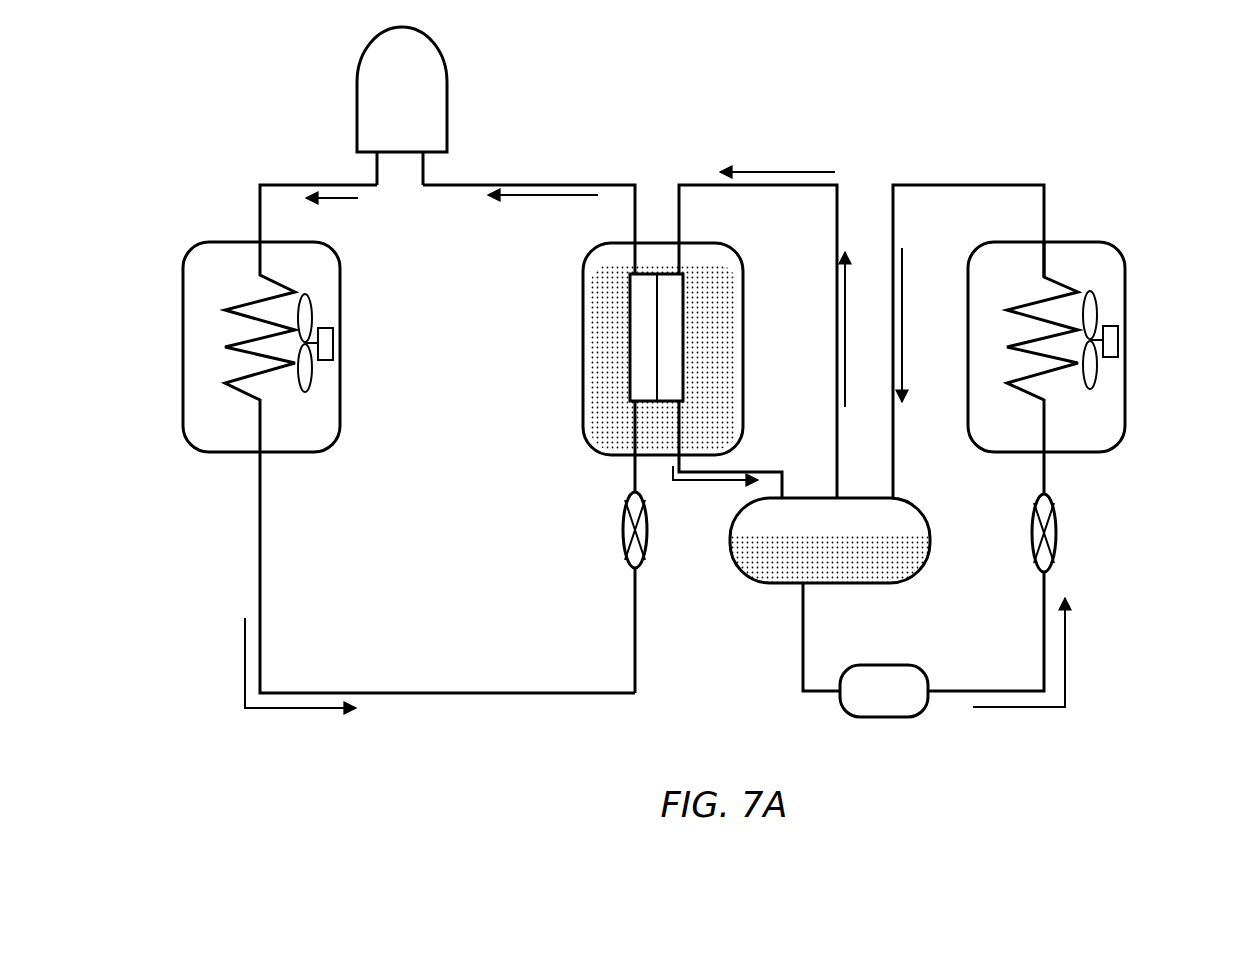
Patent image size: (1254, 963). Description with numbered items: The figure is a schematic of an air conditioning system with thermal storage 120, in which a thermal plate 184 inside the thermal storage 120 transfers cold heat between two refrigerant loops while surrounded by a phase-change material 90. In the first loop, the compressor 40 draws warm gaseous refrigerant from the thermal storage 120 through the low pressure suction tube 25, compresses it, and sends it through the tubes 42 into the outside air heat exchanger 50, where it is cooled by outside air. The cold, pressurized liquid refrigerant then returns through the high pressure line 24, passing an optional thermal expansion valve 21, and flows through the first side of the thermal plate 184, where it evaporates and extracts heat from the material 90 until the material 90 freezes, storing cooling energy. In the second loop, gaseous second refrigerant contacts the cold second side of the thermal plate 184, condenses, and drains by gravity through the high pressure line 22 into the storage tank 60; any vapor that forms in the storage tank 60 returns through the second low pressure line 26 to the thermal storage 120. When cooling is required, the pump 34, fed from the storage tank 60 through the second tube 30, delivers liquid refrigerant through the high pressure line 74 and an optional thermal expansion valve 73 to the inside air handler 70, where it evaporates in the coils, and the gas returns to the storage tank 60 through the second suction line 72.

The compressor 40 is at (447, 80).
The tubes 42 is at (285, 185).
The low pressure suction tube 25 is at (605, 185).
The second low pressure line 26 is at (837, 185).
The second suction line 72 is at (980, 185).
The outside air heat exchanger 50 is at (340, 310).
The inside air handler 70 is at (1125, 310).
The thermal storage 120 is at (617, 349).
The thermal plate 184 is at (630, 332).
The material 90 is at (718, 429).
The high pressure line 22 is at (755, 470).
The storage tank 60 is at (772, 583).
The second tube 30 is at (803, 638).
The pump 34 is at (895, 665).
The high pressure line 74 is at (965, 693).
The thermal expansion valve 73 is at (1033, 530).
The thermal expansion valve 21 is at (624, 540).
The high pressure line 24 is at (497, 693).